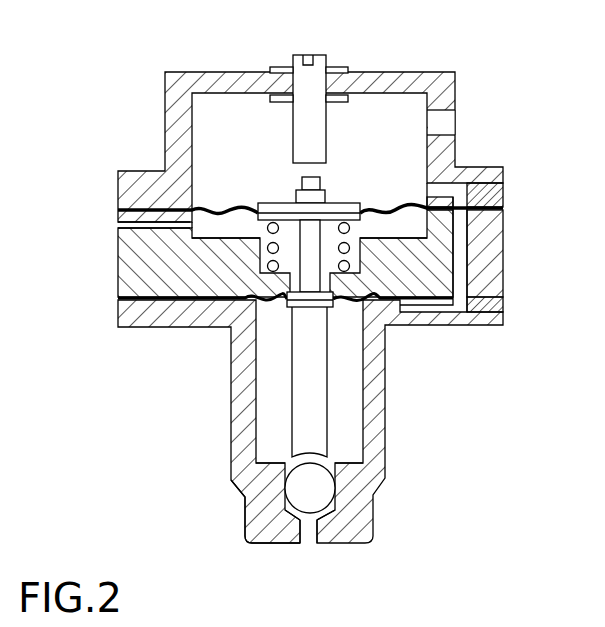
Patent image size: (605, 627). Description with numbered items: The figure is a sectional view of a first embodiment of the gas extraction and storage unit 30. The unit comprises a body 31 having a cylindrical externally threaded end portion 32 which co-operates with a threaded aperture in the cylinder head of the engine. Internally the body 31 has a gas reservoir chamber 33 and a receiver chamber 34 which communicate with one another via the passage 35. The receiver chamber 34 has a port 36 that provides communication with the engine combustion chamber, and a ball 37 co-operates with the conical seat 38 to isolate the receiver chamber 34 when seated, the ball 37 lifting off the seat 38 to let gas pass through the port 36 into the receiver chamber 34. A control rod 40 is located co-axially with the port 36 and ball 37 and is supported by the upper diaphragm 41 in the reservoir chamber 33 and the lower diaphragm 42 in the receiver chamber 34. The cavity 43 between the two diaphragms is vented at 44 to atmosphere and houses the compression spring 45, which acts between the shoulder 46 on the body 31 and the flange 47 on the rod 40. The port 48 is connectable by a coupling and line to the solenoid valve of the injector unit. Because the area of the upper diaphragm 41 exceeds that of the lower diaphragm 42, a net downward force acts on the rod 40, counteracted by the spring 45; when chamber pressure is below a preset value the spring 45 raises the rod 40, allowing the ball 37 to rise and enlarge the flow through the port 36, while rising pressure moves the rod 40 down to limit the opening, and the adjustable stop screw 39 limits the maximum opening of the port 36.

The gas extraction and storage unit 30 is at (208, 52).
The body 31 is at (229, 433).
The cylindrical externally threaded end portion 32 is at (240, 518).
The gas reservoir chamber 33 is at (402, 157).
The receiver chamber 34 is at (354, 410).
The passage 35 is at (462, 270).
The port 36 is at (309, 545).
The ball 37 is at (320, 487).
The conical seat 38 is at (336, 518).
The adjustable stop screw 39 is at (338, 58).
The control rod 40 is at (330, 385).
The upper diaphragm 41 is at (399, 206).
The lower diaphragm 42 is at (266, 304).
The cavity 43 is at (402, 240).
The vent 44 is at (116, 240).
The compression spring 45 is at (268, 282).
The shoulder 46 is at (405, 300).
The flange 47 is at (256, 226).
The port 48 is at (460, 122).